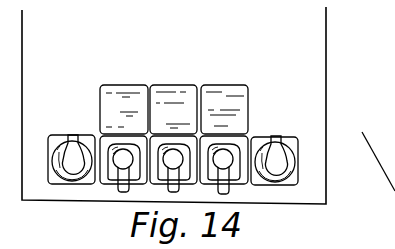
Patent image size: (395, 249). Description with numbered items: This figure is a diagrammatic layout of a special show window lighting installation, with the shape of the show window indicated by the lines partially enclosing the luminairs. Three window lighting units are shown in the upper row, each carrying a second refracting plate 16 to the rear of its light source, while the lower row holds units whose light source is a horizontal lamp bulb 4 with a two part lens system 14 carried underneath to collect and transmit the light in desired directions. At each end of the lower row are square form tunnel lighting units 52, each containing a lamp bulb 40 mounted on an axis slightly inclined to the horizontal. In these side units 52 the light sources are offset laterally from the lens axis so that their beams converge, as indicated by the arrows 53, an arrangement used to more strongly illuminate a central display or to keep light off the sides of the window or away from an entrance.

The lamp bulb 4 is at (111, 181).
The lens system 14 is at (155, 183).
The second refracting plate 16 is at (225, 91).
The lamp bulb 40 is at (64, 160).
The square form tunnel lighting units 52 is at (60, 138).
The arrows 53 is at (78, 148).